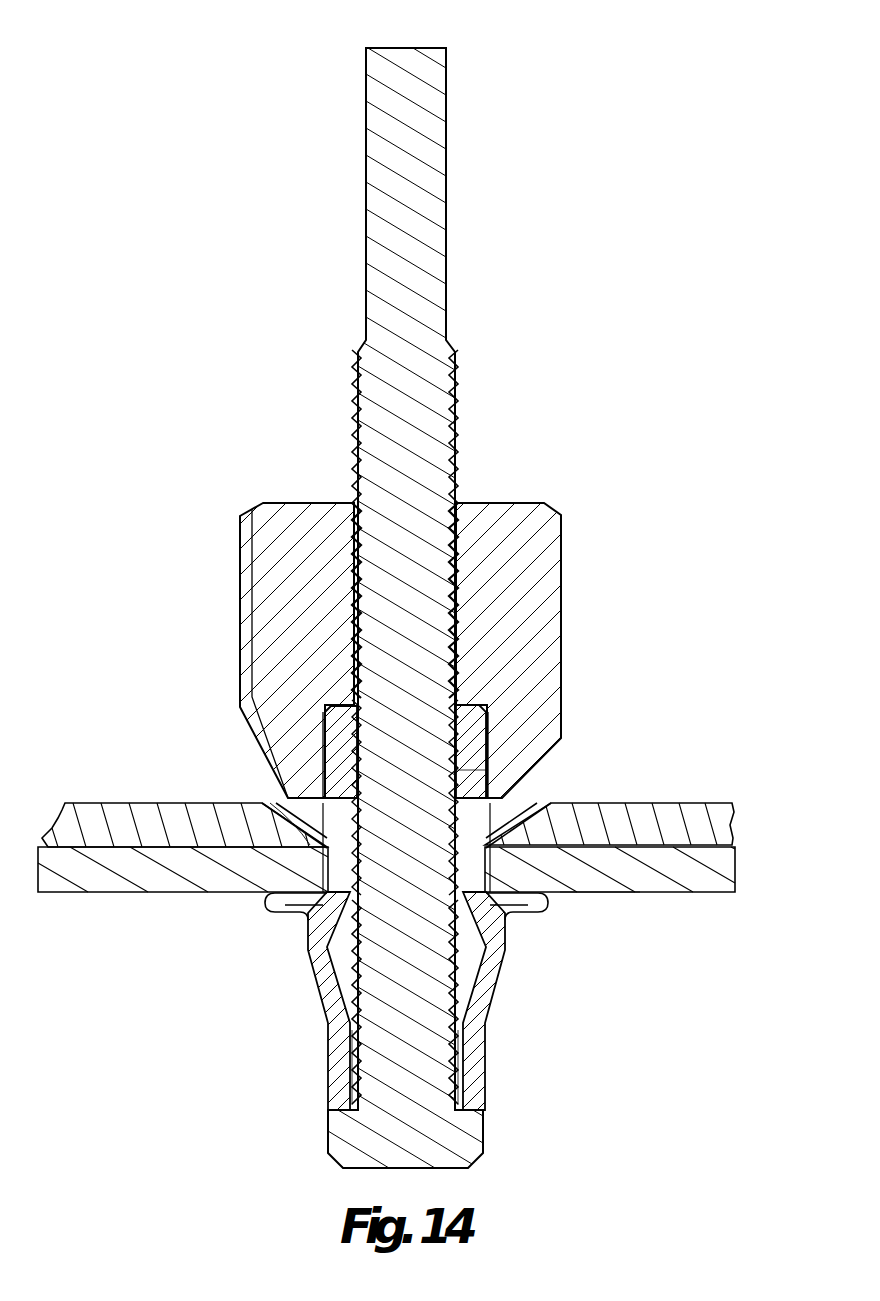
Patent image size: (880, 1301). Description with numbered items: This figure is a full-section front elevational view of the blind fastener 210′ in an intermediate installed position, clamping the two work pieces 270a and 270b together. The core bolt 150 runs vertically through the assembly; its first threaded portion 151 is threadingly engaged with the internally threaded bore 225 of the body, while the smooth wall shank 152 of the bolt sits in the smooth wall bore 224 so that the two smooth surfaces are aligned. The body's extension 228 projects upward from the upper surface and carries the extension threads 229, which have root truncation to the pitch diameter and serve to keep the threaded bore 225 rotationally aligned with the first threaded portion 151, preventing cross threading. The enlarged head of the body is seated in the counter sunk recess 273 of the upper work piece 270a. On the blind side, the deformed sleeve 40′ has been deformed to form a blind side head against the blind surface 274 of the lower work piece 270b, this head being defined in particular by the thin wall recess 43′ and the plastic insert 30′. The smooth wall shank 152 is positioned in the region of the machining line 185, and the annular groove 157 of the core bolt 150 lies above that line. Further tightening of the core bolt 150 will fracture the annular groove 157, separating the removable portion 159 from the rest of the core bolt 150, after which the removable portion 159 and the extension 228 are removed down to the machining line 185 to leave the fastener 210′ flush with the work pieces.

The core bolt 150 is at (405, 48).
The blind fastener 210′ is at (522, 162).
The removable portion 159 is at (400, 490).
The extension threads 229 is at (455, 690).
The extension 228 is at (470, 738).
The annular groove 157 is at (450, 778).
The counter sunk recess 273 is at (515, 802).
The work piece 270a is at (695, 822).
The work piece 270b is at (693, 878).
The blind surface 274 is at (600, 895).
The machining line 185 is at (266, 816).
The smooth wall shank 152 is at (300, 832).
The thin wall recess 43′ is at (285, 906).
The plastic insert 30′ is at (322, 940).
The deformed sleeve 40′ is at (332, 1000).
The smooth wall bore 224 is at (440, 860).
The internally threaded bore 225 is at (455, 980).
The first threaded portion 151 is at (470, 1040).